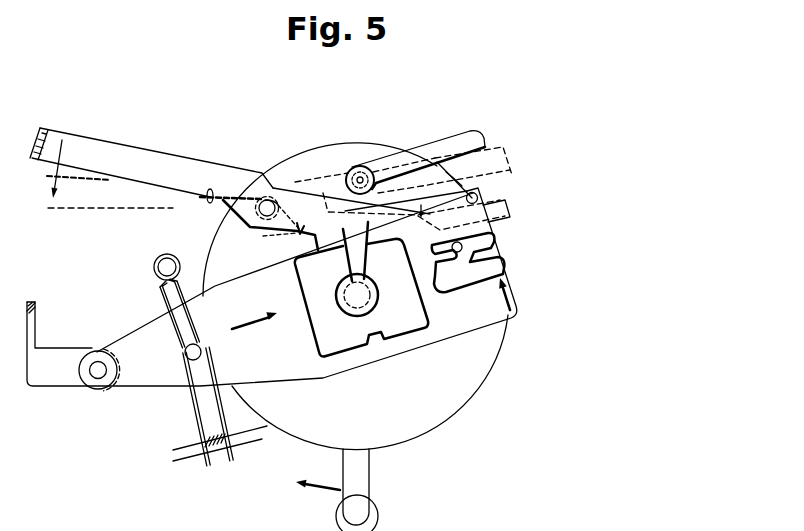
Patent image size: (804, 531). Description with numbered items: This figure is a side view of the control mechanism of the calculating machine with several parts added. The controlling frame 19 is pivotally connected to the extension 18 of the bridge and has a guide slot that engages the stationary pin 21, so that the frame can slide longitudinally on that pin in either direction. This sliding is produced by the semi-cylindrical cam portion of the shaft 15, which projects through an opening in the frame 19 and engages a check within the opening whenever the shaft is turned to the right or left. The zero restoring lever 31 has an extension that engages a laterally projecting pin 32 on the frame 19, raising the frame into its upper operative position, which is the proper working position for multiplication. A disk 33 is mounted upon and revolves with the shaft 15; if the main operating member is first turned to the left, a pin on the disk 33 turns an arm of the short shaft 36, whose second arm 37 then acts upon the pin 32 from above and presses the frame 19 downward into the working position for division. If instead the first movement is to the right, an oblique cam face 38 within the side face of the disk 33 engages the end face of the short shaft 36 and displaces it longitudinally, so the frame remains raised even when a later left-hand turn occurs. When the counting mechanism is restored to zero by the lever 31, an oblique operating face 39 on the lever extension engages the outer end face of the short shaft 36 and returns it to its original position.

The shaft 15 is at (362, 297).
The extension 18 is at (60, 378).
The controlling frame 19 is at (500, 253).
The stationary pin 21 is at (463, 250).
The zero restoring lever 31 is at (110, 162).
The laterally projecting pin 32 is at (478, 197).
The disk 33 is at (457, 390).
The short shaft 36 is at (353, 176).
The second arm 37 is at (458, 131).
The oblique cam face 38 is at (310, 183).
The oblique operating face 39 is at (382, 205).